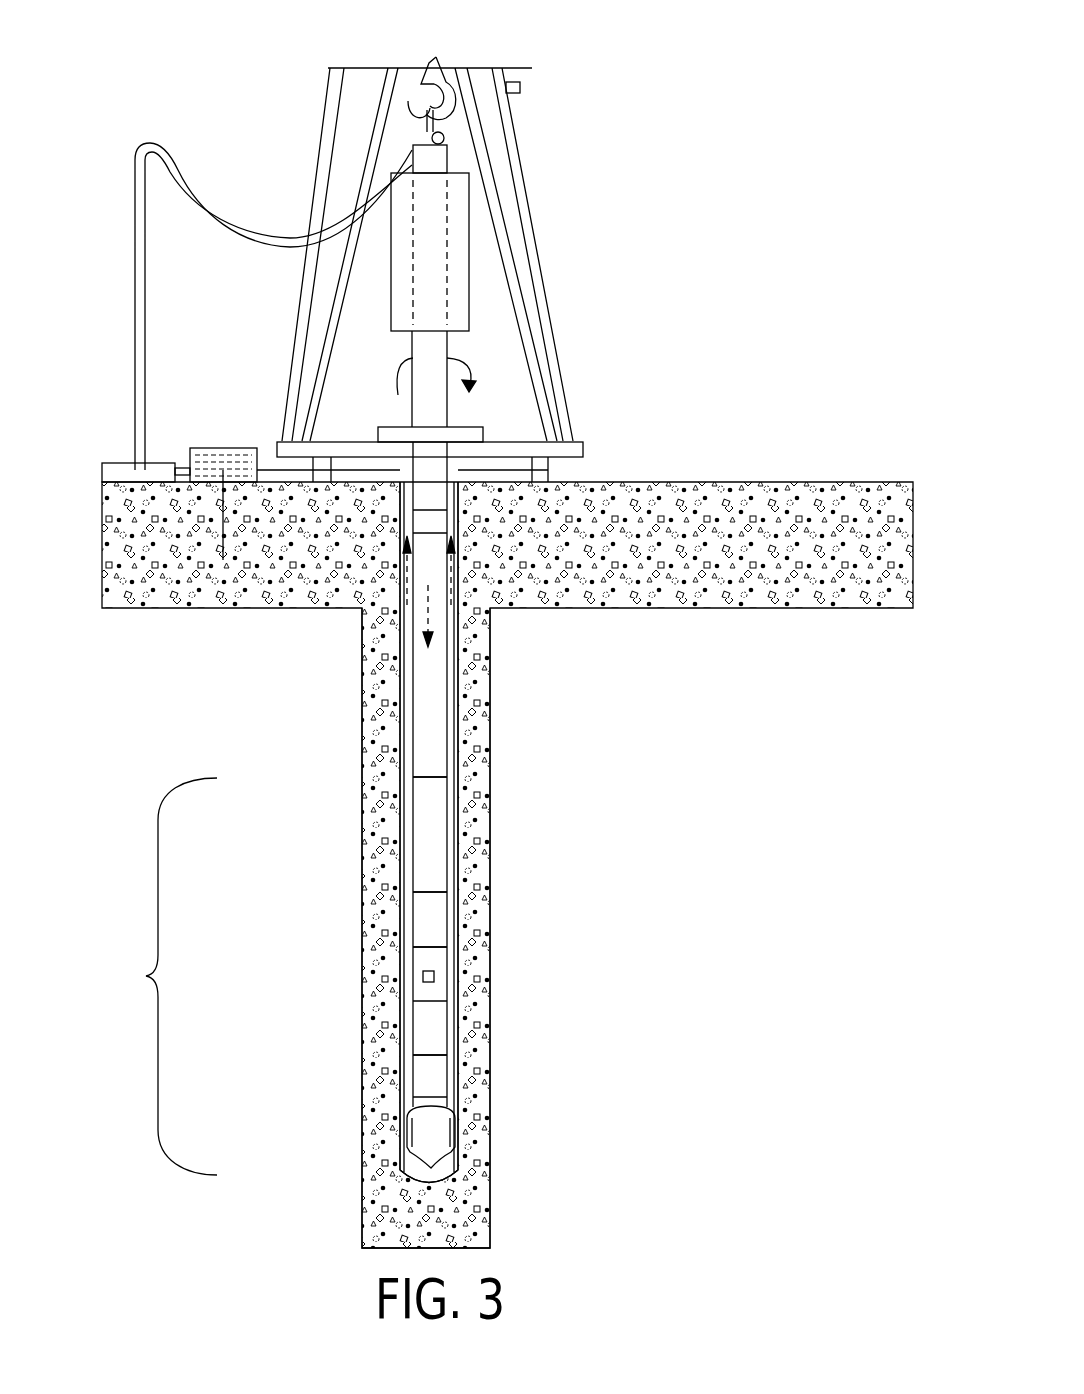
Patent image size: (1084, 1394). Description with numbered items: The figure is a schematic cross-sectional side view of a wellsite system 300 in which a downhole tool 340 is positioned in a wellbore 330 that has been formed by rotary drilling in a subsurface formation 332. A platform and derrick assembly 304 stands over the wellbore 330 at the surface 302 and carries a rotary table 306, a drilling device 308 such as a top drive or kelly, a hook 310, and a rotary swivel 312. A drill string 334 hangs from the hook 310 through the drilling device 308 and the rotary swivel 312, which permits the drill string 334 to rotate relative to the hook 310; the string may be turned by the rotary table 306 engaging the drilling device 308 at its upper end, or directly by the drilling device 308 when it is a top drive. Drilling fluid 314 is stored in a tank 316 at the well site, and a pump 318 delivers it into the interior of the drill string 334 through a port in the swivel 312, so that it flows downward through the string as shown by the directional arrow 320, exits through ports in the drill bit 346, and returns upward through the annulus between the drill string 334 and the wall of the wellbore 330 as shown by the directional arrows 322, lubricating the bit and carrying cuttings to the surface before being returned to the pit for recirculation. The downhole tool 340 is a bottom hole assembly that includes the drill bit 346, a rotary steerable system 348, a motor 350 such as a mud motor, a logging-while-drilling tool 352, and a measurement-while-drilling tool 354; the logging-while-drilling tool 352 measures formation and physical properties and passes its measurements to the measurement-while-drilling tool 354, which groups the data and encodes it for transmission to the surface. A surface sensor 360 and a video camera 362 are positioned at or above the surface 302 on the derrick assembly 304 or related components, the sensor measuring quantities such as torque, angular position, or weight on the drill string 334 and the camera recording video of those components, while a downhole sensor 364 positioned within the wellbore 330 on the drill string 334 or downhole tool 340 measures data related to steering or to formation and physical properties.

The wellsite system 300 is at (130, 102).
The surface 302 is at (688, 482).
The platform and derrick assembly 304 is at (582, 216).
The rotary table 306 is at (378, 435).
The drilling device 308 is at (375, 247).
The hook 310 is at (452, 90).
The rotary swivel 312 is at (426, 157).
The drilling fluid 314 is at (223, 560).
The tank 316 is at (219, 436).
The pump 318 is at (118, 463).
The directional arrow 320 is at (428, 634).
The directional arrows 322 is at (404, 560).
The wellbore 330 is at (456, 470).
The subsurface formation 332 is at (257, 588).
The drill string 334 is at (427, 487).
The downhole tool 340 is at (146, 976).
The drill bit 346 is at (407, 1135).
The rotary steerable system 348 is at (417, 1077).
The motor 350 is at (417, 1030).
The logging-while-drilling tool 352 is at (417, 957).
The measurement-while-drilling tool 354 is at (417, 930).
The surface sensor 360 is at (446, 138).
The video camera 362 is at (521, 88).
The downhole sensor 364 is at (434, 977).